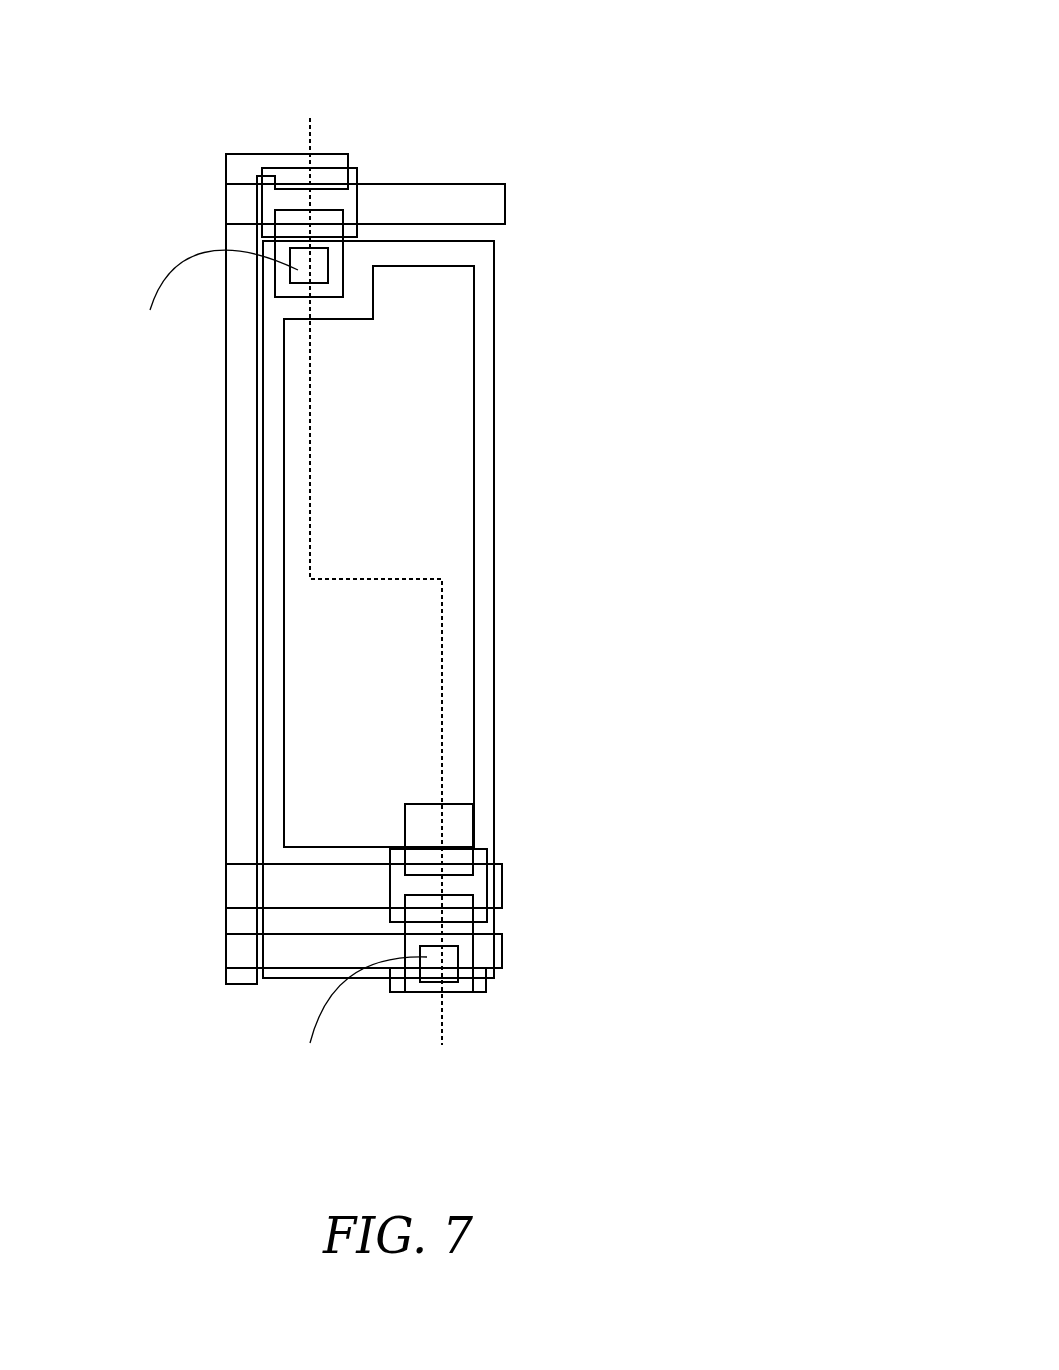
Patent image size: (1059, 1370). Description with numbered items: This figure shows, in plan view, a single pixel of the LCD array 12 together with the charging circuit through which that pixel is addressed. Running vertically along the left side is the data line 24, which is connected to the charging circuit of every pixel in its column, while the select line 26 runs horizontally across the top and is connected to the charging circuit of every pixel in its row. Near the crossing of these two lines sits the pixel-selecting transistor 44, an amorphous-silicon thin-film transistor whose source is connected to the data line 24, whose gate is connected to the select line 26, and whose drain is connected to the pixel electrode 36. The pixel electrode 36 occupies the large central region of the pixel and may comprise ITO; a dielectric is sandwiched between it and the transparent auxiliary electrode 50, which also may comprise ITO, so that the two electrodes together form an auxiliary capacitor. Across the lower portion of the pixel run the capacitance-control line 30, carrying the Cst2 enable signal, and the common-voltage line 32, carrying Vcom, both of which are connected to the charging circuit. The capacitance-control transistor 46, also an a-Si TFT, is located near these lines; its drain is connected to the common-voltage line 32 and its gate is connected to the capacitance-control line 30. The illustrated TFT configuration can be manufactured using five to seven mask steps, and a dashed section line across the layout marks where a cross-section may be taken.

The LCD array 12 is at (108, 173).
The data line 24 is at (240, 586).
The select line 26 is at (505, 206).
The capacitance-control line 30 is at (502, 883).
The common-voltage line 32 is at (502, 950).
The pixel electrode 36 is at (474, 595).
The pixel-selecting transistor 44 is at (363, 150).
The capacitance-control transistor 46 is at (508, 818).
The auxiliary electrode 50 is at (494, 450).